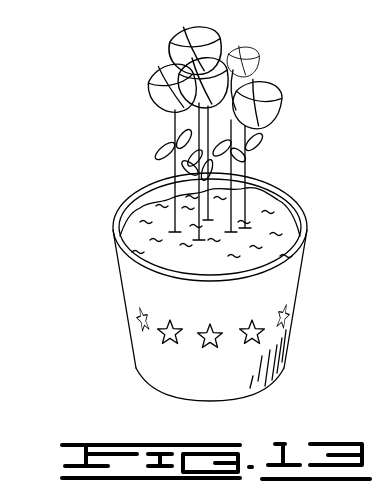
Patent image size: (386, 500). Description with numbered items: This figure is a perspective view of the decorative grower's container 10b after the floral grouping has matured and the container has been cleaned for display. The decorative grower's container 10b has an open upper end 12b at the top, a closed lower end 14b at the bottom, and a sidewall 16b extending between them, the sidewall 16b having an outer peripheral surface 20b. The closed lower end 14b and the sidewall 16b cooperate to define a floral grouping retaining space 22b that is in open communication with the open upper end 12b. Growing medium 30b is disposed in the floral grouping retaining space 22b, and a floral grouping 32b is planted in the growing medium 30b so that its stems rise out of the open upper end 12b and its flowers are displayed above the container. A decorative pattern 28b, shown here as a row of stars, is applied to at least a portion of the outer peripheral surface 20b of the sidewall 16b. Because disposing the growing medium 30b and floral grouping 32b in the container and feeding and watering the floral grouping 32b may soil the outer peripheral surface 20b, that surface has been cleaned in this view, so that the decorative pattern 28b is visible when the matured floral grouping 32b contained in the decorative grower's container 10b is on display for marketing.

The decorative grower's container 10b is at (102, 102).
The open upper end 12b is at (128, 172).
The closed lower end 14b is at (263, 384).
The sidewall 16b is at (122, 281).
The outer peripheral surface 20b is at (273, 289).
The floral grouping retaining space 22b is at (258, 202).
The decorative pattern 28b is at (162, 336).
The growing medium 30b is at (150, 227).
The floral grouping 32b is at (254, 55).